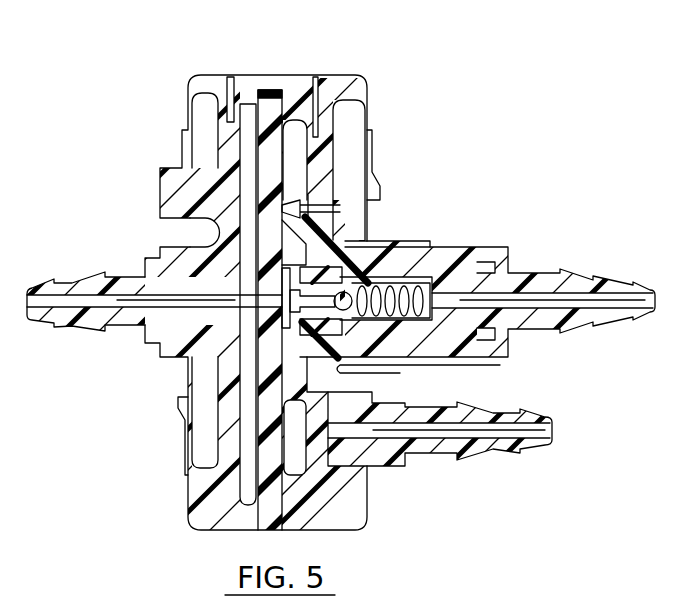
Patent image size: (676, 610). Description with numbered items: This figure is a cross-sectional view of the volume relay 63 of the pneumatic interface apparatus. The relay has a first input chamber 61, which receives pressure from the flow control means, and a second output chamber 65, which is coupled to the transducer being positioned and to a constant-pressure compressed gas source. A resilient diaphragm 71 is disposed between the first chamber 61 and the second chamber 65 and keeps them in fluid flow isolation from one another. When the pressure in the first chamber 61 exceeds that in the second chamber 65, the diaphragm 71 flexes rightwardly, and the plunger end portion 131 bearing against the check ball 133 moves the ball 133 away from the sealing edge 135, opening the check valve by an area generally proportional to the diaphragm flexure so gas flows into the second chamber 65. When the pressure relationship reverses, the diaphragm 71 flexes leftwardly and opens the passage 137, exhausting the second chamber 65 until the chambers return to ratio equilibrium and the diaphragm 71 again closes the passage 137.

The first input chamber 61 is at (247, 142).
The volume relay 63 is at (147, 505).
The second output chamber 65 is at (330, 143).
The resilient diaphragm 71 is at (263, 95).
The plunger end portion 131 is at (360, 247).
The check ball 133 is at (402, 242).
The sealing edge 135 is at (397, 362).
The passage 137 is at (312, 214).